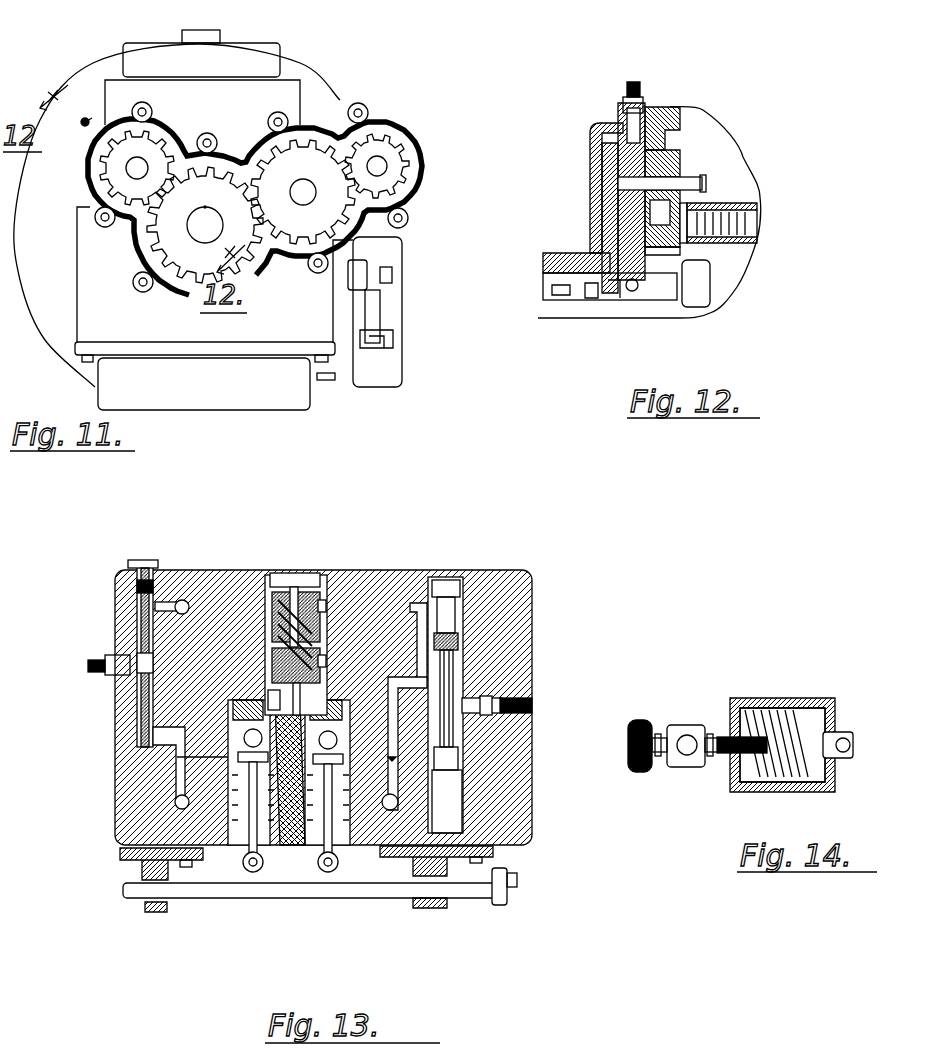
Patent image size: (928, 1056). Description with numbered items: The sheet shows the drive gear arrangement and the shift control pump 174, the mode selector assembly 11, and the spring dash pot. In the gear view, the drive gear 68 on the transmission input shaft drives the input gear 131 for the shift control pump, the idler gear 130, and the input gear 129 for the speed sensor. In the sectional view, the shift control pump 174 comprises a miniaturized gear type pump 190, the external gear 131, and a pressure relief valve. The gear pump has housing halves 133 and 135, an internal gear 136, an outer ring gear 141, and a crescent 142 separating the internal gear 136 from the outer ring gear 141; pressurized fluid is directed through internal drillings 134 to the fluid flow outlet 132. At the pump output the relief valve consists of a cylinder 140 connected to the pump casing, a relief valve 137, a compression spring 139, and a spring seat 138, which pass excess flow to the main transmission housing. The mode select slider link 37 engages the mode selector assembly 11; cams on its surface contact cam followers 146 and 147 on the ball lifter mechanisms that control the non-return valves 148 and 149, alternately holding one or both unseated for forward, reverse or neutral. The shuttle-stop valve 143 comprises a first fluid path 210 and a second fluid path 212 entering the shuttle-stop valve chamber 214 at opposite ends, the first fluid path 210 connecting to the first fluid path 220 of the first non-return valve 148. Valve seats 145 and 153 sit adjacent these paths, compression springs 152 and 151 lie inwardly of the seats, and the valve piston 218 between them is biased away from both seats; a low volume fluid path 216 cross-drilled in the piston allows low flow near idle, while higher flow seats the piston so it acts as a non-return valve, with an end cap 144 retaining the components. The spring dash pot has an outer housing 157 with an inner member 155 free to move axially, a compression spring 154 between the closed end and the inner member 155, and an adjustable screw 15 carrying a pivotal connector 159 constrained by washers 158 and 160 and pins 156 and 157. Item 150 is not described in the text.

In FIG. 13, the mode selector assembly 11 is at (532, 660).
In FIG. 14, the adjustable screw 15 is at (628, 745).
In FIG. 13, the mode select slider link 37 is at (513, 883).
In FIG. 11, the drive gear 68 is at (147, 250).
In FIG. 12, the drive gear 68 is at (592, 255).
In FIG. 11, the input gear for the speed sensor 129 is at (377, 140).
In FIG. 11, the idler gear 130 is at (347, 230).
In FIG. 11, the input gear for the shift control pump 131 is at (108, 170).
In FIG. 12, the input gear for the shift control pump 131 is at (603, 153).
In FIG. 11, the fluid flow outlet 132 is at (85, 120).
In FIG. 12, the fluid flow outlet 132 is at (633, 83).
In FIG. 12, the housing half 133 is at (648, 130).
In FIG. 12, the internal drillings 134 is at (597, 200).
In FIG. 12, the housing half 135 is at (667, 113).
In FIG. 12, the internal gear 136 is at (680, 163).
In FIG. 12, the relief valve 137 is at (708, 207).
In FIG. 12, the spring seat 138 is at (753, 220).
In FIG. 12, the compression spring 139 is at (735, 233).
In FIG. 12, the cylinder 140 is at (713, 247).
In FIG. 12, the outer ring gear 141 is at (663, 253).
In FIG. 12, the crescent 142 is at (620, 283).
In FIG. 13, the shuttle-stop valve 143 is at (268, 600).
In FIG. 13, the end cap 144 is at (285, 592).
In FIG. 13, the first valve seat 145 is at (320, 592).
In FIG. 13, the cam follower 146 is at (330, 883).
In FIG. 13, the cam follower 147 is at (237, 883).
In FIG. 13, the first non-return valve 148 is at (227, 792).
In FIG. 13, the second non-return valve 149 is at (177, 757).
In FIG. 13, the fitting 150 is at (97, 655).
In FIG. 13, the second compression spring 151 is at (270, 653).
In FIG. 13, the first compression spring 152 is at (323, 606).
In FIG. 13, the second valve seat 153 is at (323, 665).
In FIG. 14, the compression spring 154 is at (797, 710).
In FIG. 14, the inner member 155 is at (840, 737).
In FIG. 14, the pin 156 is at (708, 753).
In FIG. 14, the outer housing 157 is at (660, 757).
In FIG. 14, the washer 158 is at (660, 737).
In FIG. 14, the pivotal connector 159 is at (685, 725).
In FIG. 14, the washer 160 is at (707, 737).
In FIG. 12, the shift control pump 174 is at (586, 92).
In FIG. 12, the miniaturized gear type pump 190 is at (693, 170).
In FIG. 13, the first fluid path 210 is at (270, 590).
In FIG. 13, the second fluid path 212 is at (292, 850).
In FIG. 13, the shuttle-stop valve chamber 214 is at (318, 615).
In FIG. 13, the low volume fluid path 216 is at (306, 590).
In FIG. 13, the valve piston 218 is at (428, 582).
In FIG. 13, the first fluid path of the first non-return valve 220 is at (270, 648).